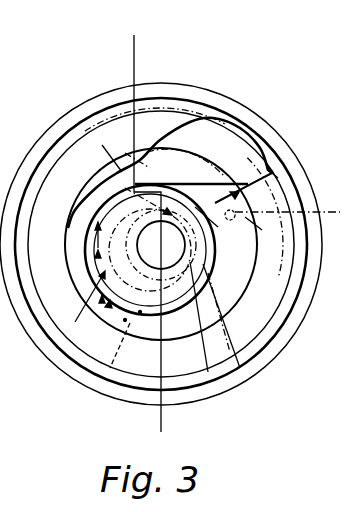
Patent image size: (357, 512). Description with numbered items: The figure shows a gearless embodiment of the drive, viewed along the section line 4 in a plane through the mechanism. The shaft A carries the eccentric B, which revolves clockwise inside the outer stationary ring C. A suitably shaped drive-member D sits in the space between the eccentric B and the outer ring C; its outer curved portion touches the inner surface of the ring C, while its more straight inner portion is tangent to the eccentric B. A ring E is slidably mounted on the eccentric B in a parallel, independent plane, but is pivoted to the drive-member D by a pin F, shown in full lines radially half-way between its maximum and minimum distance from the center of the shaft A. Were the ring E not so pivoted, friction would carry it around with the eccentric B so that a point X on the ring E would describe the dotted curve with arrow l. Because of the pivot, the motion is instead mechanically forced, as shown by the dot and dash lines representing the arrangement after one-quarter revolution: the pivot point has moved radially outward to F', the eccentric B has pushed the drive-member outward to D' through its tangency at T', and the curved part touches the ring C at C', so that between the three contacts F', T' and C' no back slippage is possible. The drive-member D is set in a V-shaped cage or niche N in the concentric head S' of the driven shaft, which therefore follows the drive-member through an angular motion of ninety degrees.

The section line 4- 4 is at (134, 33).
The shaft A is at (209, 372).
The eccentric B is at (75, 322).
The outer stationary ring C is at (161, 248).
The point of contact on outer ring C' is at (178, 244).
The drive-member D is at (170, 187).
The advanced position of drive-member D' is at (300, 232).
The ring E is at (83, 188).
The pin F is at (126, 116).
The advanced position of pivot point F' is at (296, 213).
The V-shaped cage or niche N is at (102, 145).
The concentric head S' is at (196, 126).
The point of tangency T' is at (243, 214).
The point on ring X is at (150, 322).
The dotted line with arrow l is at (110, 368).